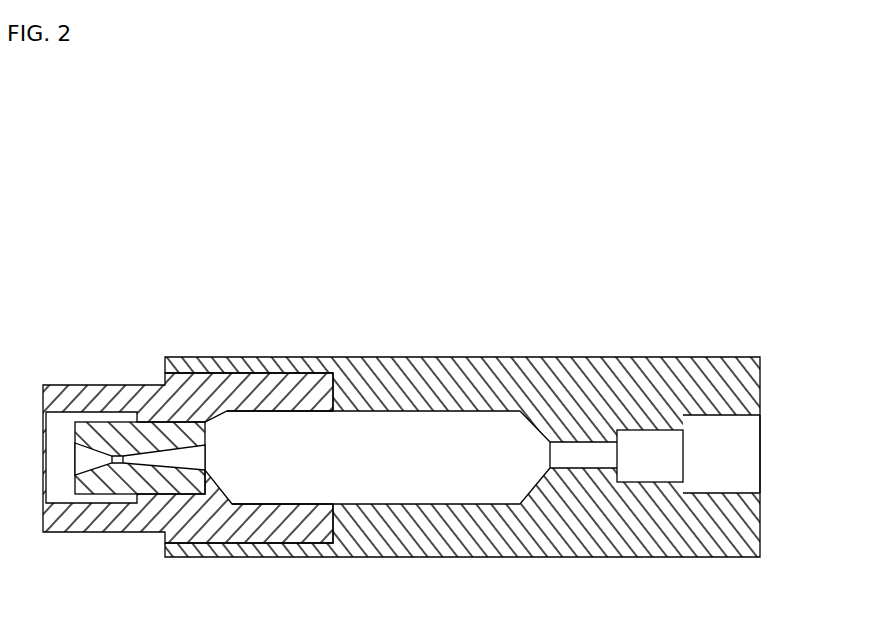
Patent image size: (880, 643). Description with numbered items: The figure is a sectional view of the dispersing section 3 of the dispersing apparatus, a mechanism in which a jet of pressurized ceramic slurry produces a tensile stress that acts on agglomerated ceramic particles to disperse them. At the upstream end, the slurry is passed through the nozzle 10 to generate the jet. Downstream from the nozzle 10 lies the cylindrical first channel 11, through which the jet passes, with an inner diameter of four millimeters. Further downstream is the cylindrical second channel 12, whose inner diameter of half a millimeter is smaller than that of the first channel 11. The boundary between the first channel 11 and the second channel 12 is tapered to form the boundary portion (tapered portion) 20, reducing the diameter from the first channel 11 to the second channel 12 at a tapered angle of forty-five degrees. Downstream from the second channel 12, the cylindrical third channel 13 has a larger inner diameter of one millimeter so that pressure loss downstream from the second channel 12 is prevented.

The dispersing section 3 is at (415, 353).
The nozzle 10 is at (150, 420).
The first channel 11 is at (297, 430).
The second channel 12 is at (583, 453).
The third channel 13 is at (653, 450).
The boundary portion (tapered portion) 20 is at (533, 488).